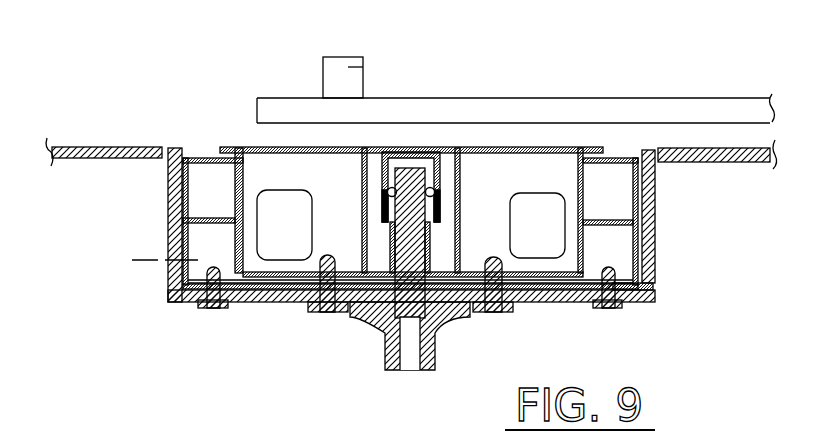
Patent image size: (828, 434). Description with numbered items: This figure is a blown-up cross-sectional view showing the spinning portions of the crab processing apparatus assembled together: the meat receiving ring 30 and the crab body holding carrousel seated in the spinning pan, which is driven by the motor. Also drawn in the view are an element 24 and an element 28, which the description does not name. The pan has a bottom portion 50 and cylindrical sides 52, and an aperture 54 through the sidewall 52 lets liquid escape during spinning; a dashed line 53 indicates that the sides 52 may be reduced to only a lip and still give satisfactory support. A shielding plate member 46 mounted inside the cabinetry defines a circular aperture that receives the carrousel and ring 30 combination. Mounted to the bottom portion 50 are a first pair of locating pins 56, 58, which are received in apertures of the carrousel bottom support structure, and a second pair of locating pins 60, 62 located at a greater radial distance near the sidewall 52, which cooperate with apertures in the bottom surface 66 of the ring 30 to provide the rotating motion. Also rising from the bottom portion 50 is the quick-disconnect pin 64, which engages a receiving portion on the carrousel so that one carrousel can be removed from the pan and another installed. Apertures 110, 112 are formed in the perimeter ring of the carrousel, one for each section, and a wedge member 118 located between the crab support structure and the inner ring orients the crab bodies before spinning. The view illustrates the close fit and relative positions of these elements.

The drive motor 24 is at (343, 57).
The wedge member 118 is at (513, 110).
The hub 28 is at (374, 160).
The meat receiving ring 30 is at (203, 157).
The aperture 112 is at (283, 217).
The aperture 110 is at (540, 213).
The quick-disconnect pin 64 is at (410, 252).
The shielding plate member 46 is at (88, 160).
The cylindrical sides 52 is at (168, 215).
The bottom portion 50 is at (548, 303).
The aperture 54 is at (655, 287).
The dashed line 53 is at (147, 263).
The bottom surface 66 is at (247, 300).
The locating pin 60 is at (215, 310).
The locating pin 56 is at (330, 313).
The locating pin 58 is at (492, 313).
The locating pin 62 is at (610, 312).